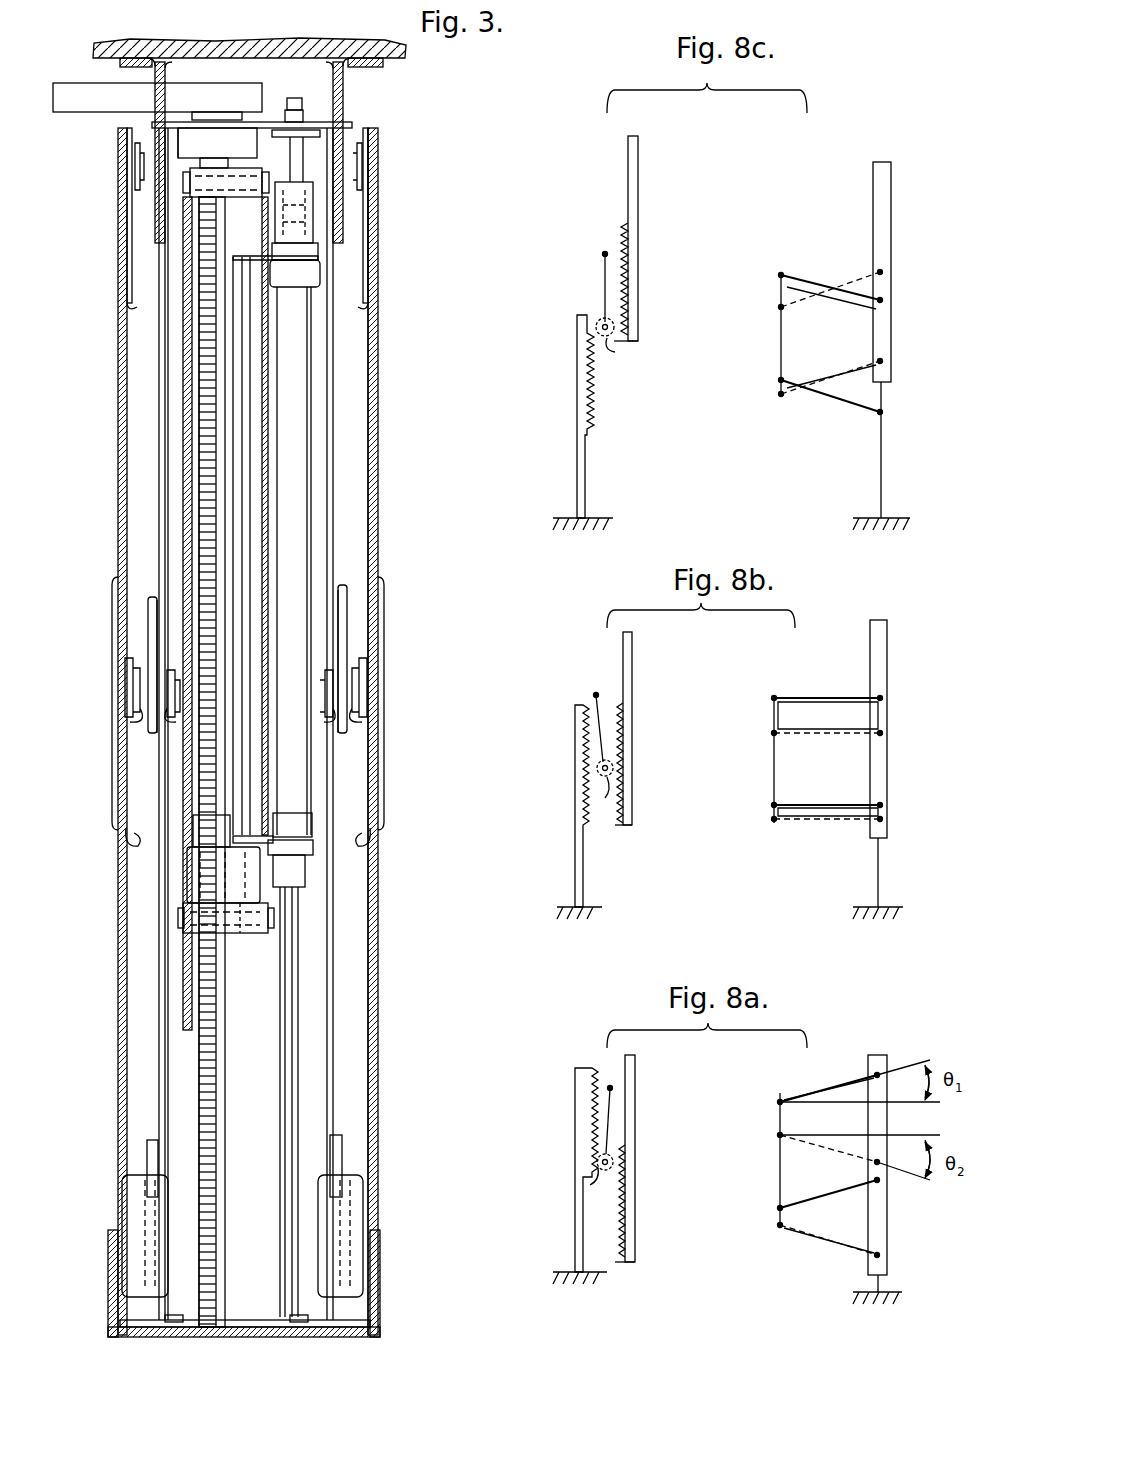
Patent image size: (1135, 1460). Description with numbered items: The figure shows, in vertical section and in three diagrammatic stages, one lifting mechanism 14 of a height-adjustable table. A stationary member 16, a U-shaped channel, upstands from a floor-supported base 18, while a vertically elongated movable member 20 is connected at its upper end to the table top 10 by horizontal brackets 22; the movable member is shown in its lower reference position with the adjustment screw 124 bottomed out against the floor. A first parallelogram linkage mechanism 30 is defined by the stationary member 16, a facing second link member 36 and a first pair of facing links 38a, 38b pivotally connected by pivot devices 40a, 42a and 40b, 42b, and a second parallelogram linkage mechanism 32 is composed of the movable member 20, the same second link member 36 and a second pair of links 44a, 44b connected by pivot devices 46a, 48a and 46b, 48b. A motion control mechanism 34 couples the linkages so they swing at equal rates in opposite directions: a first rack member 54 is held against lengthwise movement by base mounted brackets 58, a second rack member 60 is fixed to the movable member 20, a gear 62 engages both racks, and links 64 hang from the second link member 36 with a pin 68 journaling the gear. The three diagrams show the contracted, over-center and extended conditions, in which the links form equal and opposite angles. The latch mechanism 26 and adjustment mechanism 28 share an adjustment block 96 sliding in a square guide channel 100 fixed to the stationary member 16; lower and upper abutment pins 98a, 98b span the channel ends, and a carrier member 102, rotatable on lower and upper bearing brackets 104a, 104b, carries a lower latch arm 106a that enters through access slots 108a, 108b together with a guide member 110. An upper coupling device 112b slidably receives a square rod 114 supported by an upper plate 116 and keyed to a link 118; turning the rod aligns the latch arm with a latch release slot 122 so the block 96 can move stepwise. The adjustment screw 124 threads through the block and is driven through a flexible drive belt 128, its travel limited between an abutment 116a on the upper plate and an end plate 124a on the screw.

In FIG. 3, the table top 10 is at (133, 33).
In FIG. 3, the mechanism 14 is at (390, 195).
In FIG. 3, the stationary member 16 is at (108, 1012).
In FIG. 8c, the stationary member 16 is at (890, 479).
In FIG. 8b, the stationary member 16 is at (886, 880).
In FIG. 8a, the stationary member 16 is at (884, 1282).
In FIG. 3, the base 18 is at (388, 1315).
In FIG. 3, the movable member 20 is at (160, 1068).
In FIG. 8c, the movable member 20 is at (870, 186).
In FIG. 8b, the movable member 20 is at (866, 636).
In FIG. 8a, the movable member 20 is at (862, 1057).
In FIG. 3, the brackets 22 is at (110, 72).
In FIG. 3, the latch mechanism 26 is at (320, 358).
In FIG. 3, the adjustment mechanism 28 is at (207, 76).
In FIG. 3, the first parallelogram linkage mechanism 30 is at (358, 282).
In FIG. 8c, the first parallelogram linkage mechanism 30 is at (845, 302).
In FIG. 8b, the first parallelogram linkage mechanism 30 is at (801, 690).
In FIG. 8a, the first parallelogram linkage mechanism 30 is at (823, 1080).
In FIG. 3, the second parallelogram linkage mechanism 32 is at (140, 613).
In FIG. 8c, the second parallelogram linkage mechanism 32 is at (841, 364).
In FIG. 8b, the second parallelogram linkage mechanism 32 is at (828, 825).
In FIG. 8a, the second parallelogram linkage mechanism 32 is at (812, 1243).
In FIG. 8c, the motion control mechanism 34 is at (642, 298).
In FIG. 8b, the motion control mechanism 34 is at (640, 752).
In FIG. 8a, the motion control mechanism 34 is at (642, 1153).
In FIG. 8c, the second link member 36 is at (781, 342).
In FIG. 8b, the second link member 36 is at (774, 767).
In FIG. 8a, the second link member 36 is at (780, 1163).
In FIG. 3, the first facing link 38a is at (130, 846).
In FIG. 8c, the first facing link 38a is at (823, 416).
In FIG. 8b, the first facing link 38a is at (846, 803).
In FIG. 8a, the first facing link 38a is at (815, 1200).
In FIG. 3, the first facing link 38b is at (127, 215).
In FIG. 8c, the first facing link 38b is at (803, 273).
In FIG. 8b, the first facing link 38b is at (838, 697).
In FIG. 8a, the first facing link 38b is at (805, 1094).
In FIG. 3, the pivot device 40a is at (127, 714).
In FIG. 8c, the pivot device 40a is at (882, 412).
In FIG. 8b, the pivot device 40a is at (882, 805).
In FIG. 8a, the pivot device 40a is at (882, 1183).
In FIG. 3, the pivot device 40b is at (133, 160).
In FIG. 8c, the pivot device 40b is at (882, 300).
In FIG. 8b, the pivot device 40b is at (882, 698).
In FIG. 8a, the pivot device 40b is at (880, 1073).
In FIG. 8c, the pivot device 42a is at (780, 380).
In FIG. 8b, the pivot device 42a is at (773, 805).
In FIG. 8a, the pivot device 42a is at (779, 1208).
In FIG. 8c, the pivot device 42b is at (780, 275).
In FIG. 8b, the pivot device 42b is at (773, 698).
In FIG. 8a, the pivot device 42b is at (779, 1102).
In FIG. 3, the second facing parallel link 44a is at (147, 1150).
In FIG. 8c, the second facing parallel link 44a is at (820, 380).
In FIG. 8b, the second facing parallel link 44a is at (802, 823).
In FIG. 8a, the second facing parallel link 44a is at (828, 1258).
In FIG. 3, the second facing parallel link 44b is at (152, 625).
In FIG. 8c, the second facing parallel link 44b is at (853, 280).
In FIG. 8b, the second facing parallel link 44b is at (845, 737).
In FIG. 8a, the second facing parallel link 44b is at (840, 1150).
In FIG. 3, the pivot device 46a is at (162, 1215).
In FIG. 8c, the pivot device 46a is at (882, 361).
In FIG. 8b, the pivot device 46a is at (882, 819).
In FIG. 8a, the pivot device 46a is at (880, 1253).
In FIG. 3, the pivot device 46b is at (172, 730).
In FIG. 8c, the pivot device 46b is at (882, 271).
In FIG. 8b, the pivot device 46b is at (882, 733).
In FIG. 8a, the pivot device 46b is at (875, 1165).
In FIG. 8c, the pivot device 48a is at (780, 402).
In FIG. 8b, the pivot device 48a is at (773, 822).
In FIG. 8a, the pivot device 48a is at (779, 1225).
In FIG. 8c, the pivot device 48b is at (780, 305).
In FIG. 8b, the pivot device 48b is at (773, 733).
In FIG. 8a, the pivot device 48b is at (779, 1135).
In FIG. 8c, the first rack member 54 is at (577, 383).
In FIG. 8b, the first rack member 54 is at (575, 798).
In FIG. 8a, the first rack member 54 is at (575, 1140).
In FIG. 3, the brackets 58 is at (172, 1324).
In FIG. 8c, the second rack member 60 is at (638, 211).
In FIG. 8b, the second rack member 60 is at (632, 712).
In FIG. 8a, the second rack member 60 is at (635, 1083).
In FIG. 8c, the gear 62 is at (618, 346).
In FIG. 8b, the gear 62 is at (606, 800).
In FIG. 8a, the gear 62 is at (598, 1170).
In FIG. 8c, the links 64 is at (604, 274).
In FIG. 8b, the links 64 is at (599, 688).
In FIG. 8a, the links 64 is at (612, 1120).
In FIG. 8c, the pin 68 is at (616, 323).
In FIG. 8b, the pin 68 is at (613, 768).
In FIG. 8a, the pin 68 is at (614, 1164).
In FIG. 3, the adjustment block 96 is at (200, 880).
In FIG. 3, the abutment pin 98a is at (236, 937).
In FIG. 3, the abutment pin 98b is at (244, 160).
In FIG. 3, the guide channel 100 is at (185, 460).
In FIG. 3, the carrier member 102 is at (310, 468).
In FIG. 3, the lower bearing bracket 104a is at (318, 838).
In FIG. 3, the upper bearing bracket 104b is at (320, 275).
In FIG. 3, the lower latch arm 106a is at (255, 833).
In FIG. 3, the lower access slot 108a is at (318, 862).
In FIG. 3, the upper access slot 108b is at (252, 320).
In FIG. 3, the guide member 110 is at (245, 403).
In FIG. 3, the upper coupling device 112b is at (314, 221).
In FIG. 3, the rod 114 is at (352, 125).
In FIG. 3, the upper plate 116 is at (304, 150).
In FIG. 3, the abutment 116a is at (178, 138).
In FIG. 3, the link 118 is at (320, 118).
In FIG. 3, the latch release slot 122 is at (248, 935).
In FIG. 3, the adjustment screw 124 is at (200, 365).
In FIG. 3, the end plate 124a is at (218, 1330).
In FIG. 3, the flexible drive belt 128 is at (203, 110).